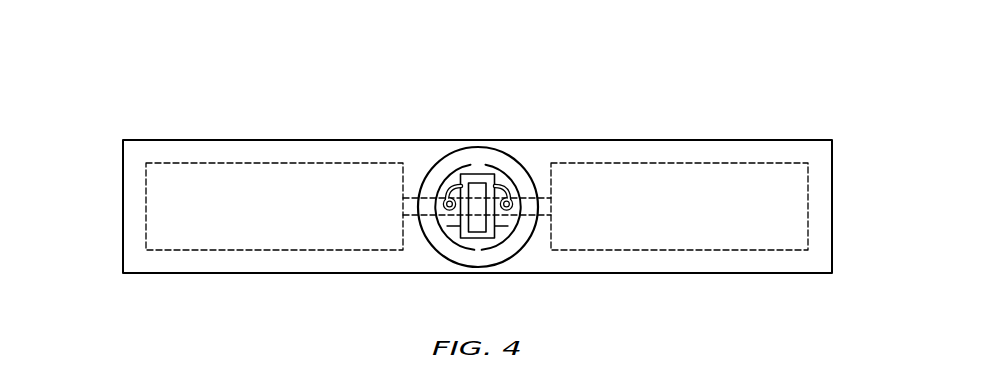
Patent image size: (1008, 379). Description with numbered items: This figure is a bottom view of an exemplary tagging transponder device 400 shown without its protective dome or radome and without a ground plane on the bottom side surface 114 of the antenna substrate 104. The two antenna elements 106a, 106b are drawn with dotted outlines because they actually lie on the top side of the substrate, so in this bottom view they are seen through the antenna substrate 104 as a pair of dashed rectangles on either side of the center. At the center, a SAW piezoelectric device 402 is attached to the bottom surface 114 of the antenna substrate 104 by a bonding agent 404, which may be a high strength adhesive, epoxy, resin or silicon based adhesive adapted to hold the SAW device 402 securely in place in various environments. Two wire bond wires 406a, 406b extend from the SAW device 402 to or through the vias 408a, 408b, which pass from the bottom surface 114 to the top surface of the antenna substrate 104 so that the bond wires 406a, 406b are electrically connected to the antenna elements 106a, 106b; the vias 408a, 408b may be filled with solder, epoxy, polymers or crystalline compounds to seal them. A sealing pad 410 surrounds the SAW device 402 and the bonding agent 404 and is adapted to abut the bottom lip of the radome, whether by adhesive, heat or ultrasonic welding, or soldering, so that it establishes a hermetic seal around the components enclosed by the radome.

The tagging transponder device 400 is at (307, 69).
The antenna substrate 104 is at (211, 138).
The bottom side surface 114 is at (123, 158).
The antenna element 106a is at (289, 192).
The antenna element 106b is at (666, 189).
The sealing pad 410 is at (429, 162).
The bonding agent 404 is at (478, 171).
The SAW piezoelectric device 402 is at (478, 223).
The wire bond wire 406a is at (446, 200).
The wire bond wire 406b is at (510, 200).
The via 408a is at (448, 238).
The via 408b is at (508, 238).